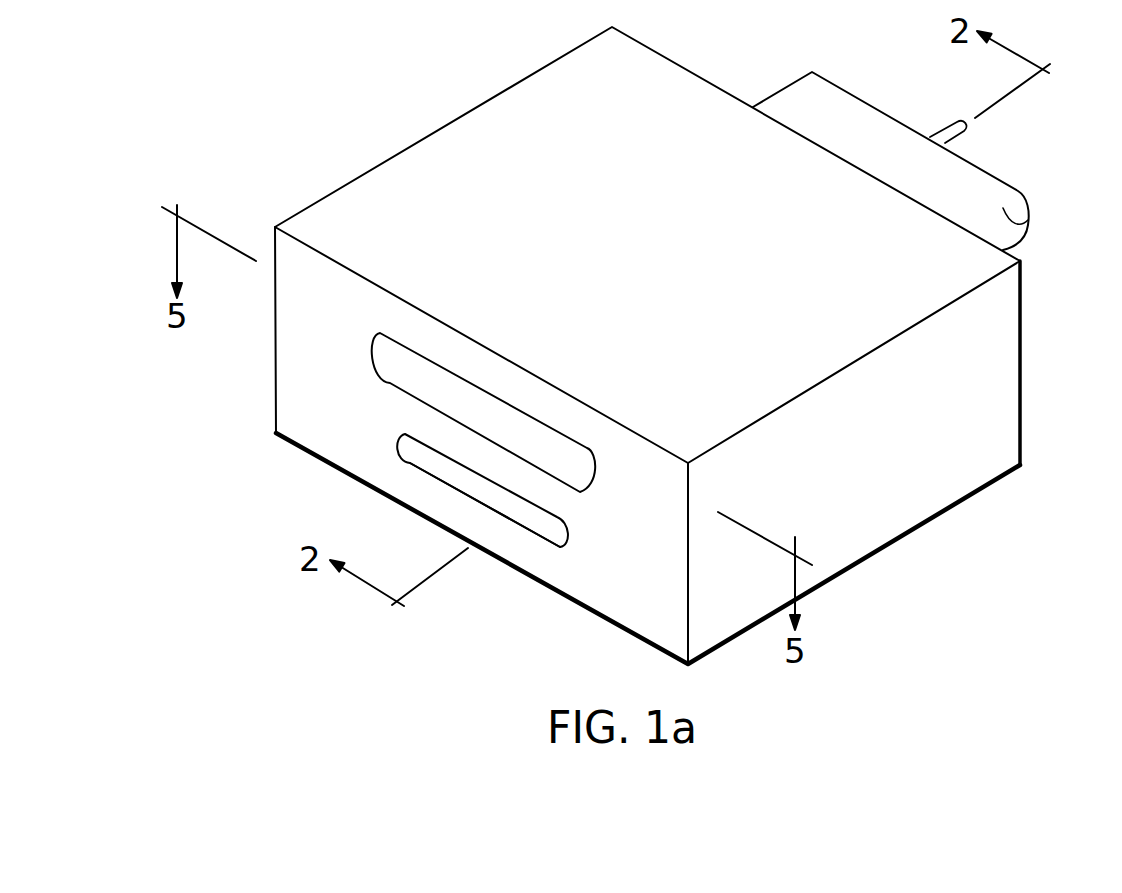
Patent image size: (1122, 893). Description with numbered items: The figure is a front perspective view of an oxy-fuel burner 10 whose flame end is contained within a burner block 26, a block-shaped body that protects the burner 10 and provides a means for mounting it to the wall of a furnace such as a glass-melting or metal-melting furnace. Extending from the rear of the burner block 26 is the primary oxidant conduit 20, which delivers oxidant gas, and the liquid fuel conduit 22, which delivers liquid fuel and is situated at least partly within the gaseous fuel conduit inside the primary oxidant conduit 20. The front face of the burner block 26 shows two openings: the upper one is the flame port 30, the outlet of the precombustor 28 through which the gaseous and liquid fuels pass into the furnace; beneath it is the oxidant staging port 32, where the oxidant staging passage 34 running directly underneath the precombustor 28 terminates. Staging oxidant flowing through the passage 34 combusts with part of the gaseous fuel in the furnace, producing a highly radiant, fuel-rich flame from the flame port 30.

The burner 10 is at (945, 576).
The primary oxidant conduit 20 is at (1005, 210).
The liquid fuel conduit 22 is at (947, 132).
The burner block 26 is at (1020, 352).
The precombustor 28 is at (567, 462).
The flame port 30 is at (390, 383).
The oxidant staging port 32 is at (432, 478).
The oxidant staging passage 34 is at (503, 503).